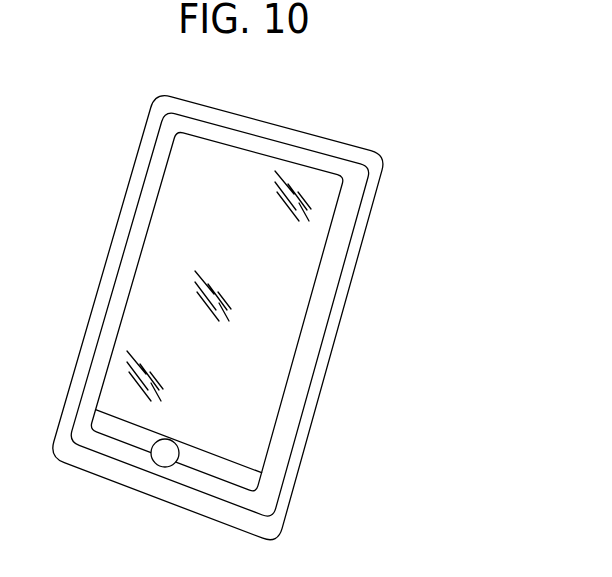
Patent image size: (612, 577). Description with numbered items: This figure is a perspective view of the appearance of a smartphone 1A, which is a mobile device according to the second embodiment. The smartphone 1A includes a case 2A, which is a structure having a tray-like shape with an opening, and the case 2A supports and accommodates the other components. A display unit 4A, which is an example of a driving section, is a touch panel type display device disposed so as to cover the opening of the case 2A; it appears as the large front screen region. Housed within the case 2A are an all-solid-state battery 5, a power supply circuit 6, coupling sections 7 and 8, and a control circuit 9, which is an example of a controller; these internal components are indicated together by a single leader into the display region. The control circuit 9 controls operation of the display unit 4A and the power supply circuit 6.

The smartphone 1A is at (490, 130).
The case 2A is at (371, 161).
The display unit 4A is at (235, 172).
The all-solid-state battery 5 is at (263, 303).
The power supply circuit 6 is at (263, 303).
The coupling section 7 is at (263, 303).
The coupling section 8 is at (263, 303).
The control circuit 9 is at (263, 303).